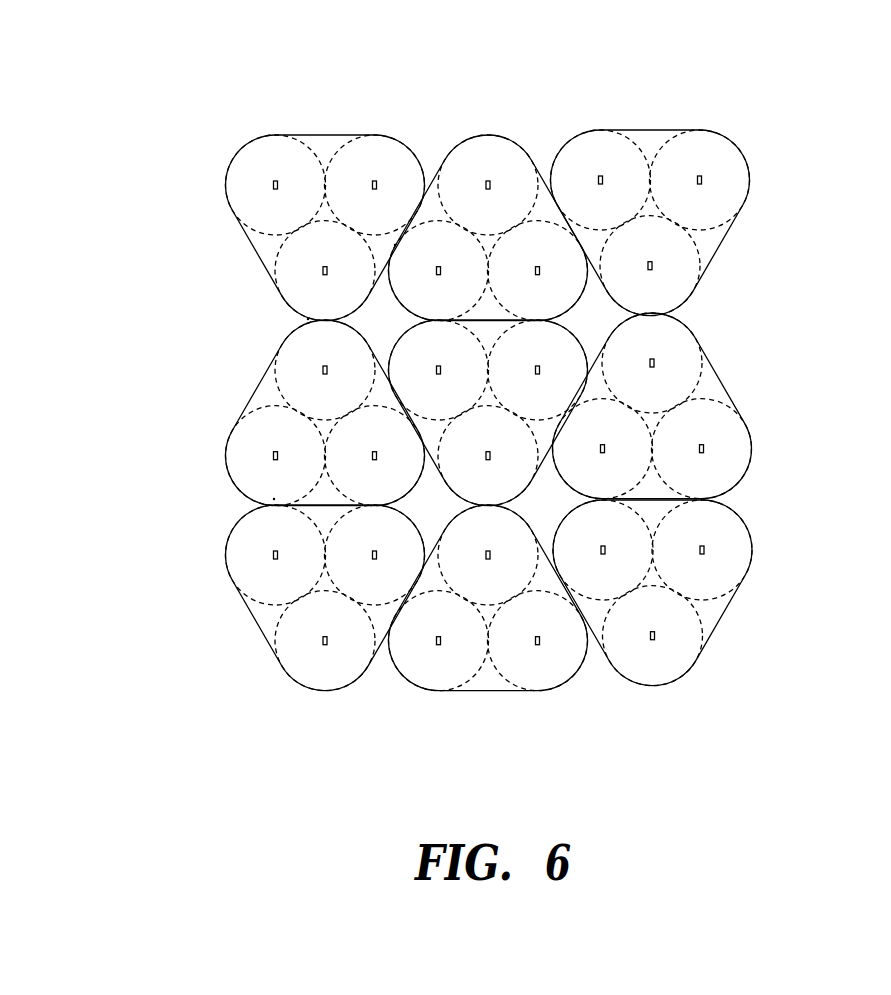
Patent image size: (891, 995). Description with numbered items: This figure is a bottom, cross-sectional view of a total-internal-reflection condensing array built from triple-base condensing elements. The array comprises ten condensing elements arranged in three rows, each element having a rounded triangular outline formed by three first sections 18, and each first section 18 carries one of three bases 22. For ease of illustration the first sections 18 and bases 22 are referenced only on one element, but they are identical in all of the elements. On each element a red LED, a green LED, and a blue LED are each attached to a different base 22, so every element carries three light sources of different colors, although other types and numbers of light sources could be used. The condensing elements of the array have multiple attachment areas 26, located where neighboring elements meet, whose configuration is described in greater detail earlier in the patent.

The first section 18 is at (311, 152).
The base 22 is at (383, 148).
The attachment area 26 is at (393, 244).